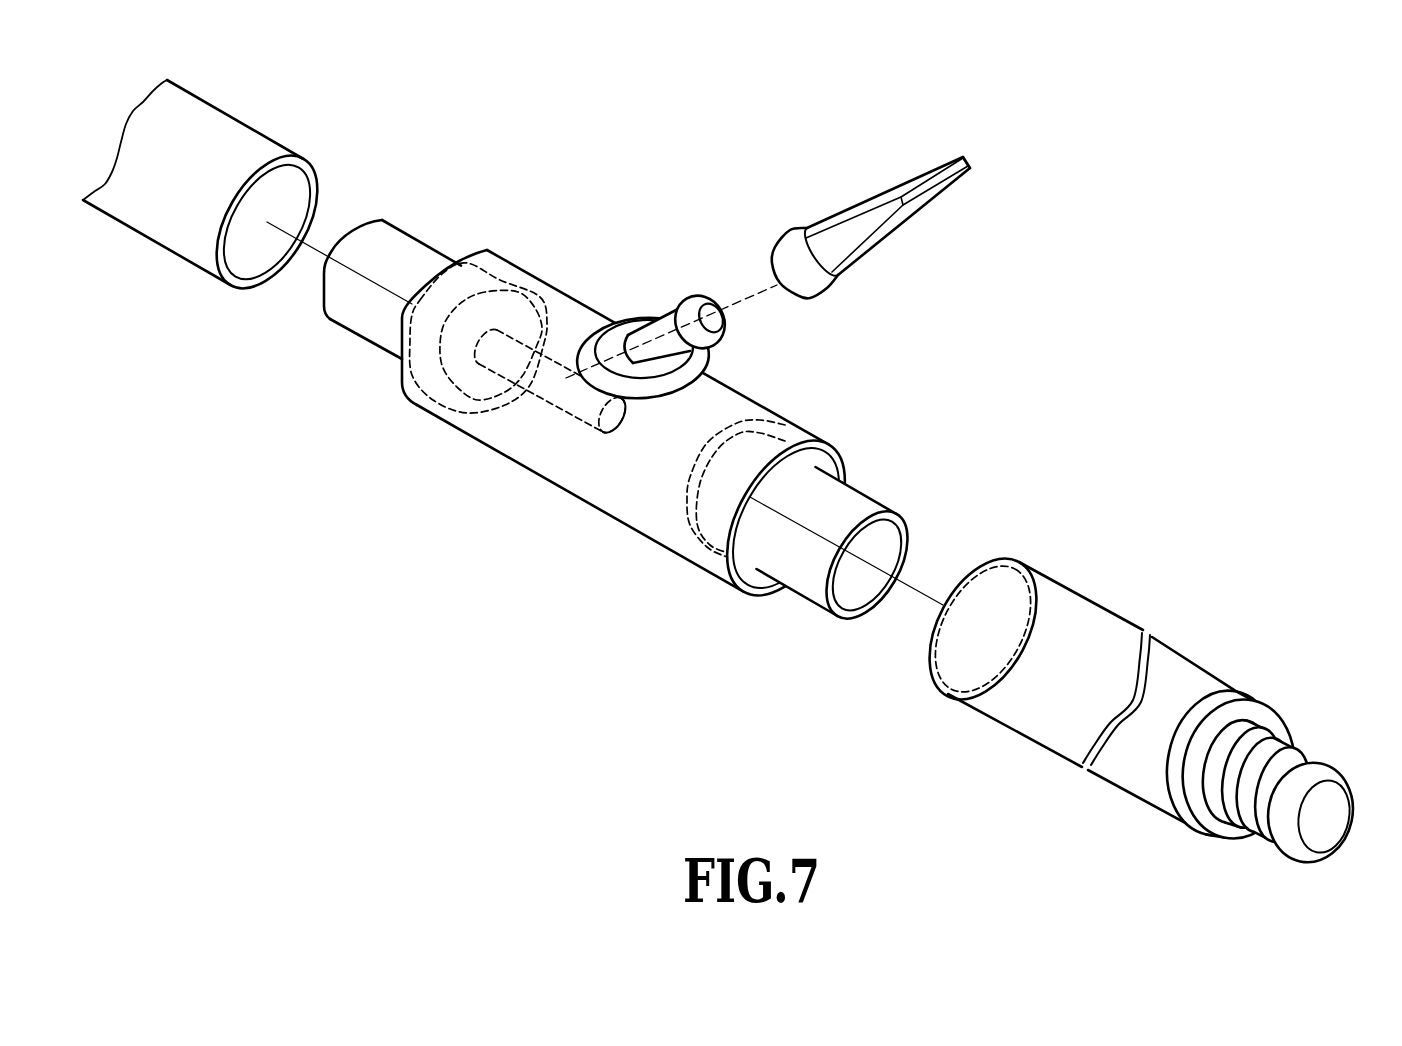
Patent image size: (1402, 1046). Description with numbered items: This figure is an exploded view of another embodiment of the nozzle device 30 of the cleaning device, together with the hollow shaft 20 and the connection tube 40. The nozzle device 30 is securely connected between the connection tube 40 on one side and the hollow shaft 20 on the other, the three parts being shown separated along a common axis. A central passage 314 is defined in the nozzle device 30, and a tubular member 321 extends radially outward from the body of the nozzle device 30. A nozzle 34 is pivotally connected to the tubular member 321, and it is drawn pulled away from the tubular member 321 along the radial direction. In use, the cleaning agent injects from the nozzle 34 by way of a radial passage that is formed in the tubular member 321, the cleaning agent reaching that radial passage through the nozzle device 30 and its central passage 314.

The hollow shaft 20 is at (123, 228).
The nozzle device 30 is at (553, 504).
The central passage 314 is at (540, 390).
The tubular member 321 is at (628, 330).
The nozzle 34 is at (900, 220).
The connection tube 40 is at (1124, 611).